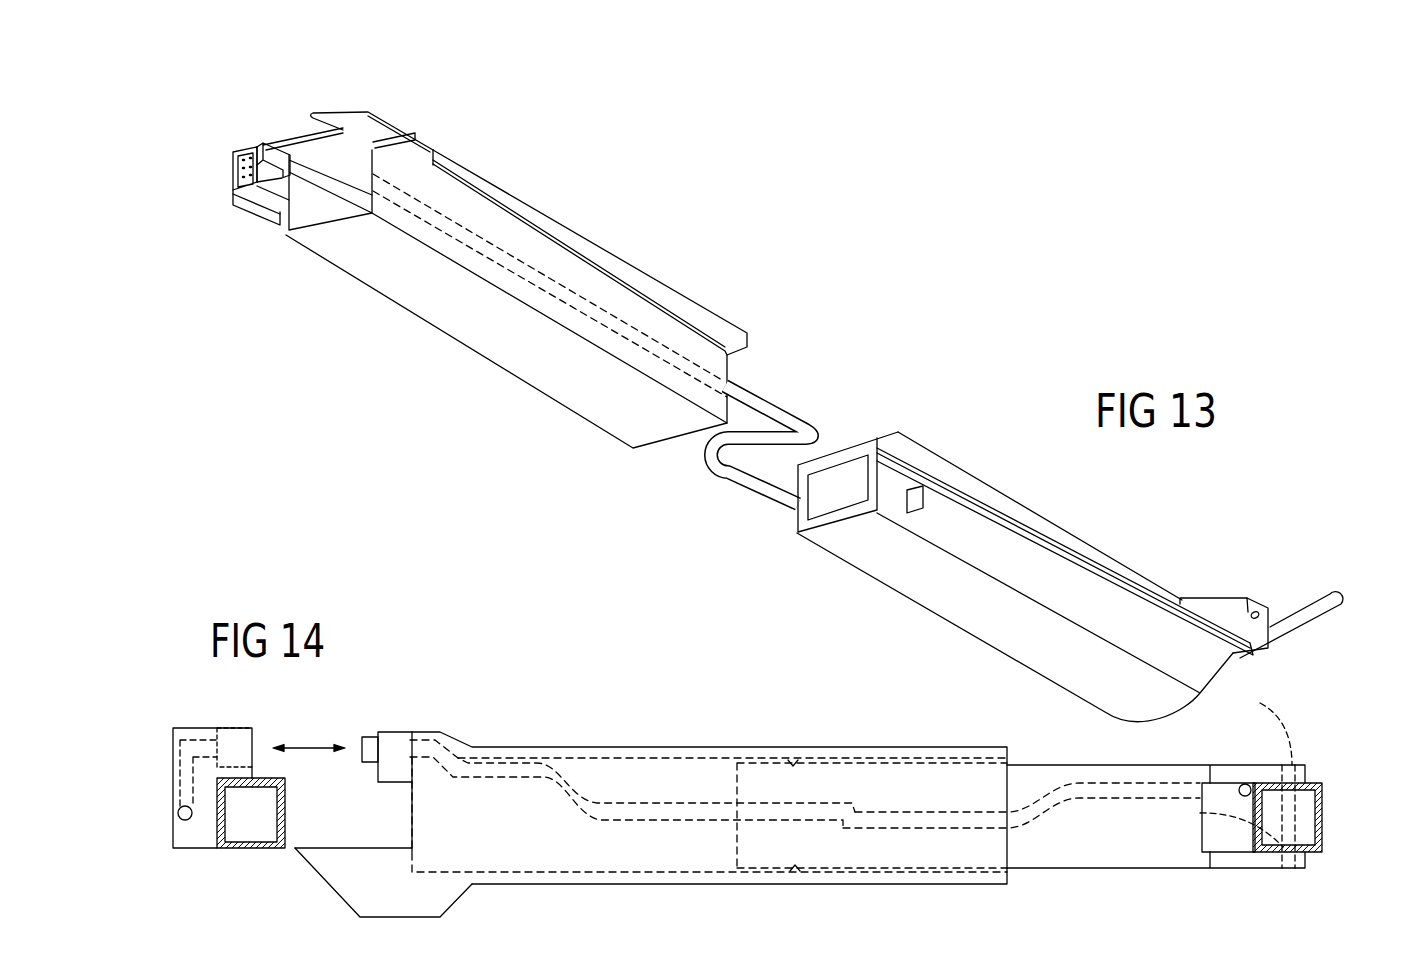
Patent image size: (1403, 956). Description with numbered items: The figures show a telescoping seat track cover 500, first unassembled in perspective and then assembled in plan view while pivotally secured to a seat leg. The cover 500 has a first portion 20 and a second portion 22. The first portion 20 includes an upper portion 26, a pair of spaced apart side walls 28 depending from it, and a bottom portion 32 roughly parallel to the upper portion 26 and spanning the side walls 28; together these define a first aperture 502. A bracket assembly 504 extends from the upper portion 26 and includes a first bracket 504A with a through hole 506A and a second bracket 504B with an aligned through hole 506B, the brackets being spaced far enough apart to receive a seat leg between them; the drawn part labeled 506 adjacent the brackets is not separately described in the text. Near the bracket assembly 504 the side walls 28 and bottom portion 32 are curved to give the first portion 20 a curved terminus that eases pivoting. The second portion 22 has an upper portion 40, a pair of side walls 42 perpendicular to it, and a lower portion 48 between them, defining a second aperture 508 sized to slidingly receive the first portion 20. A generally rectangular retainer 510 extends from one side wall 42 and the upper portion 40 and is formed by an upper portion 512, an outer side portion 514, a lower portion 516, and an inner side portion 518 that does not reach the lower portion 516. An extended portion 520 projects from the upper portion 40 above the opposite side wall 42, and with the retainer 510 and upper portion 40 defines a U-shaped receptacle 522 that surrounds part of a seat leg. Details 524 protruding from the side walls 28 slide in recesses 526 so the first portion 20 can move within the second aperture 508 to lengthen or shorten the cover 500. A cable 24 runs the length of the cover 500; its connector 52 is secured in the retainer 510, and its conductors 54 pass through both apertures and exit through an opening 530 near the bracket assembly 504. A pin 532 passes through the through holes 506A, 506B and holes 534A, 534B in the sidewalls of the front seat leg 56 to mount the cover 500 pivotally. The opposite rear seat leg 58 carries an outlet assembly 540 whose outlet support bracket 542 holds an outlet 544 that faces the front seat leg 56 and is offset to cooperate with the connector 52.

In FIG. 13, the seat track cover 500 is at (837, 302).
In FIG. 14, the seat track cover 500 is at (598, 683).
In FIG. 13, the first aperture 502 is at (847, 463).
In FIG. 13, the bracket assembly 504 is at (1213, 597).
In FIG. 14, the bracket assembly 504 is at (1237, 870).
In FIG. 13, the first bracket 504A is at (1247, 598).
In FIG. 14, the first bracket 504A is at (1227, 865).
In FIG. 14, the second bracket 504B is at (1263, 770).
In FIG. 13, the pin bar 506 is at (1268, 608).
In FIG. 14, the through hole 506A is at (1217, 826).
In FIG. 14, the through hole 506B is at (1252, 730).
In FIG. 13, the second aperture 508 is at (367, 160).
In FIG. 13, the retainer 510 is at (267, 140).
In FIG. 14, the retainer 510 is at (398, 742).
In FIG. 13, the upper portion 512 is at (263, 143).
In FIG. 13, the outer side portion 514 is at (233, 193).
In FIG. 13, the lower portion 516 is at (258, 208).
In FIG. 13, the inner side portion 518 is at (308, 137).
In FIG. 13, the extended portion 520 is at (370, 110).
In FIG. 14, the extended portion 520 is at (418, 900).
In FIG. 13, the receptacle 522 is at (312, 113).
In FIG. 14, the receptacle 522 is at (410, 812).
In FIG. 13, the detail 524 is at (920, 495).
In FIG. 14, the detail 524 is at (793, 762).
In FIG. 13, the recess 526 is at (623, 323).
In FIG. 14, the recess 526 is at (888, 760).
In FIG. 14, the opening 530 is at (1187, 787).
In FIG. 14, the pin 532 is at (1288, 808).
In FIG. 14, the hole 534A is at (1300, 867).
In FIG. 14, the hole 534B is at (1293, 780).
In FIG. 14, the outlet assembly 540 is at (170, 818).
In FIG. 14, the outlet support bracket 542 is at (177, 730).
In FIG. 14, the outlet 544 is at (252, 748).
In FIG. 13, the first portion 20 is at (950, 460).
In FIG. 14, the first portion 20 is at (1085, 765).
In FIG. 13, the second portion 22 is at (527, 197).
In FIG. 14, the second portion 22 is at (632, 745).
In FIG. 13, the cable 24 is at (697, 473).
In FIG. 14, the cable 24 is at (587, 807).
In FIG. 13, the upper portion 26 is at (1000, 492).
In FIG. 14, the upper portion 26 is at (1075, 777).
In FIG. 13, the side walls 28 is at (1000, 555).
In FIG. 13, the bottom portion 32 is at (995, 630).
In FIG. 13, the upper portion 40 is at (550, 213).
In FIG. 14, the upper portion 40 is at (503, 755).
In FIG. 13, the side walls 42 is at (598, 292).
In FIG. 13, the lower portion 48 is at (557, 372).
In FIG. 13, the connector 52 is at (232, 163).
In FIG. 14, the connector 52 is at (368, 748).
In FIG. 13, the conductors 54 is at (743, 377).
In FIG. 14, the conductors 54 is at (908, 810).
In FIG. 14, the front seat leg 56 is at (1322, 813).
In FIG. 14, the rear seat leg 58 is at (257, 848).